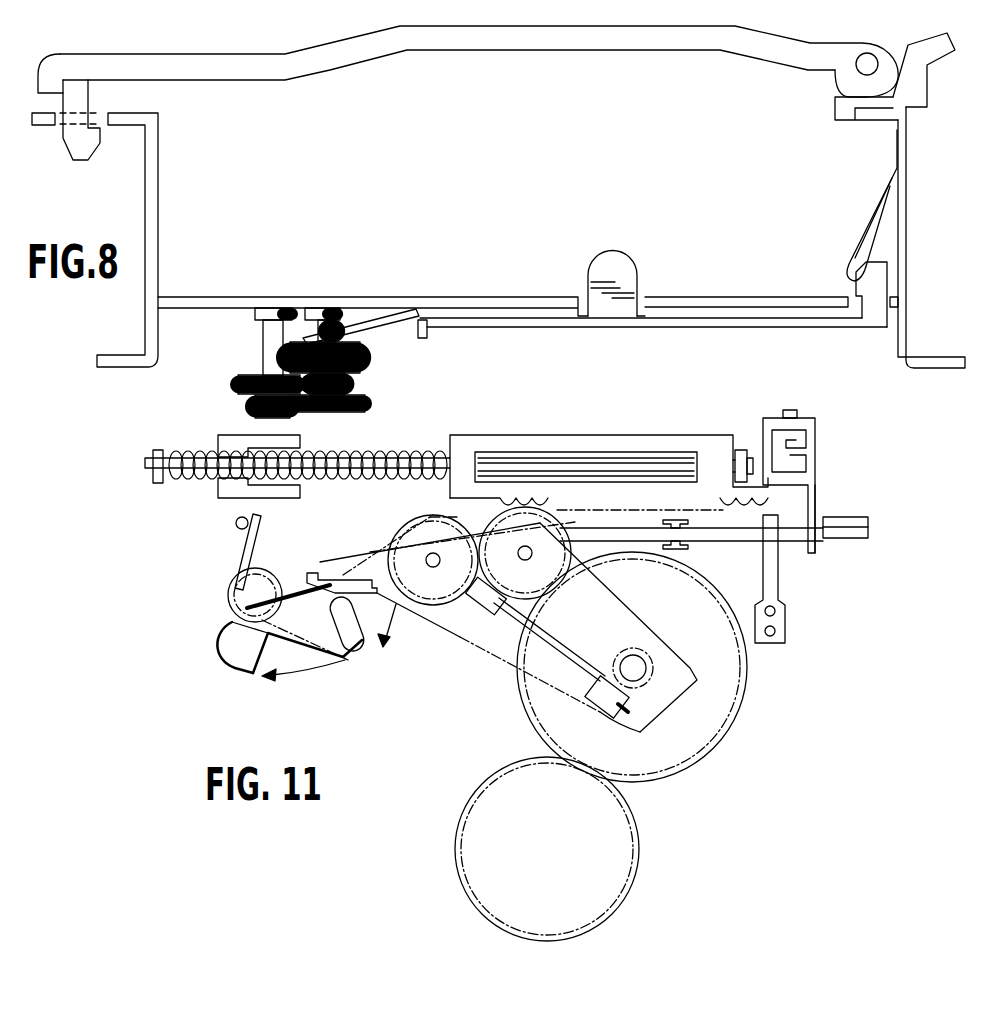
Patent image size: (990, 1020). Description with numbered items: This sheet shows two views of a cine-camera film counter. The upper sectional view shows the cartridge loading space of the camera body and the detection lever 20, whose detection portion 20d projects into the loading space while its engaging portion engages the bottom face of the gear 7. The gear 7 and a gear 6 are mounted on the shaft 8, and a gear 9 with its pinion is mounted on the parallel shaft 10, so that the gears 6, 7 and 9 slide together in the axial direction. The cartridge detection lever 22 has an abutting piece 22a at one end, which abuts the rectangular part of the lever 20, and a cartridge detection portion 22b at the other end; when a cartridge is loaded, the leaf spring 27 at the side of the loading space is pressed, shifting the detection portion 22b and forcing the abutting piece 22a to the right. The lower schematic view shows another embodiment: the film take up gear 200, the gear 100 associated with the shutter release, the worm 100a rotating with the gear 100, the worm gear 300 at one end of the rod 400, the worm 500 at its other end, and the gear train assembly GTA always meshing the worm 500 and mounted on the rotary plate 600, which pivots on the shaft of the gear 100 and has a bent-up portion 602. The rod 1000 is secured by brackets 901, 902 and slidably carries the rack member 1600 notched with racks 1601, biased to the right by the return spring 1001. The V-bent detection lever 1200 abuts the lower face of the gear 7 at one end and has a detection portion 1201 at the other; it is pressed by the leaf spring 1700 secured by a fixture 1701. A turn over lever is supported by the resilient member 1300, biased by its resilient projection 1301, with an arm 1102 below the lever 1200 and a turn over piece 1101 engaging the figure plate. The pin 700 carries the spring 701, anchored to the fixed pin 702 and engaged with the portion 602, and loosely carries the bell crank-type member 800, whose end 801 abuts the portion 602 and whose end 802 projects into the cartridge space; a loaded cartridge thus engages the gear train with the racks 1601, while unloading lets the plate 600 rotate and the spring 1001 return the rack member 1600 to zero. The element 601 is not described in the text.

In FIG. 8, the gear 6 is at (362, 408).
In FIG. 8, the gear 7 is at (350, 358).
In FIG. 8, the shaft 8 is at (318, 312).
In FIG. 8, the gear 9 is at (242, 385).
In FIG. 8, the shaft 10 is at (264, 338).
In FIG. 8, the detection lever 20 is at (422, 312).
In FIG. 8, the detection portion 20d is at (632, 283).
In FIG. 8, the cartridge detection lever 22 is at (803, 328).
In FIG. 8, the abutting piece 22a is at (425, 338).
In FIG. 8, the cartridge detection portion 22b is at (882, 278).
In FIG. 8, the leaf spring 27 is at (858, 250).
In FIG. 11, the gear 100 is at (737, 713).
In FIG. 11, the worm 100a is at (650, 652).
In FIG. 11, the film take up gear 200 is at (506, 768).
In FIG. 11, the worm gear 300 is at (592, 707).
In FIG. 11, the rod 400 is at (548, 641).
In FIG. 11, the worm 500 is at (473, 608).
In FIG. 11, the rotary plate 600 is at (690, 566).
In FIG. 11, the shaft end 601 is at (652, 672).
In FIG. 11, the bent-up portion 602 is at (334, 590).
In FIG. 11, the pin 700 is at (234, 592).
In FIG. 11, the spring 701 is at (256, 550).
In FIG. 11, the fixed pin 702 is at (236, 523).
In FIG. 11, the bell crank-type member 800 is at (250, 632).
In FIG. 11, the end of bell crank member 801 is at (348, 656).
In FIG. 11, the end of bell crank member 802 is at (232, 662).
In FIG. 11, the bracket 901 is at (741, 448).
In FIG. 11, the bracket 902 is at (156, 453).
In FIG. 11, the rod 1000 is at (212, 452).
In FIG. 11, the return spring 1001 is at (378, 452).
In FIG. 11, the turn over piece 1101 is at (790, 412).
In FIG. 11, the arm 1102 is at (818, 505).
In FIG. 11, the detection lever 1200 is at (753, 545).
In FIG. 11, the detection portion 1201 is at (868, 525).
In FIG. 11, the resilient member 1300 is at (800, 452).
In FIG. 11, the resilient projection 1301 is at (770, 440).
In FIG. 11, the rack member 1600 is at (583, 423).
In FIG. 11, the racks 1601 is at (760, 506).
In FIG. 11, the leaf spring 1700 is at (778, 588).
In FIG. 11, the fixture 1701 is at (775, 618).
In FIG. 11, the gear train assembly GTA is at (398, 523).